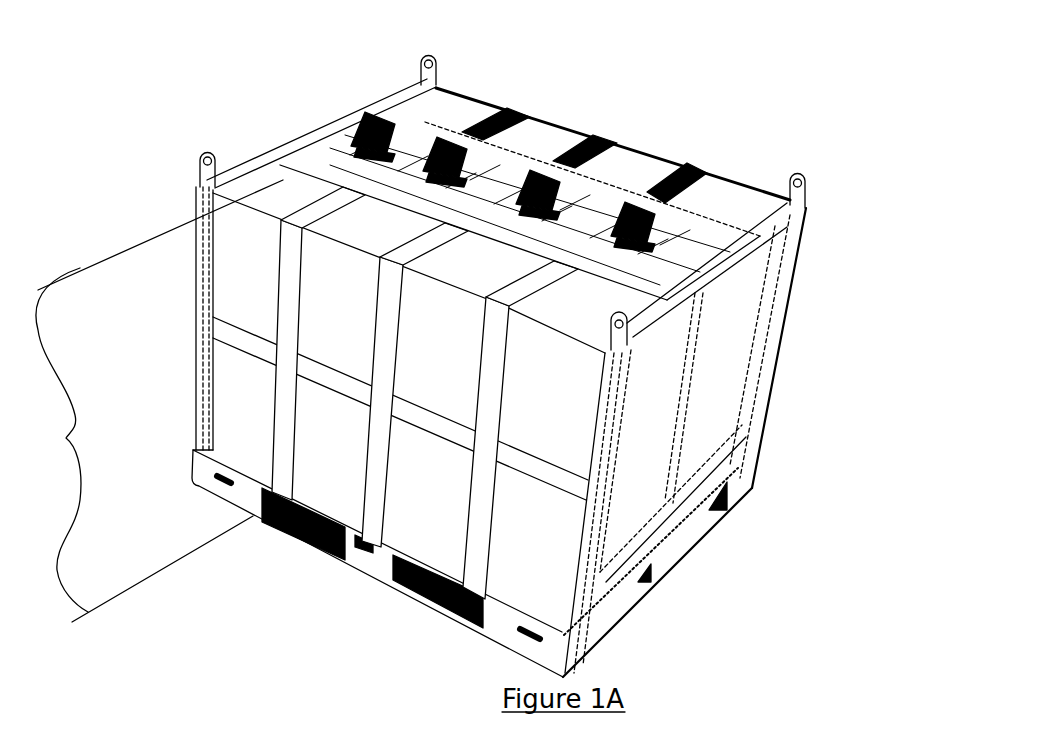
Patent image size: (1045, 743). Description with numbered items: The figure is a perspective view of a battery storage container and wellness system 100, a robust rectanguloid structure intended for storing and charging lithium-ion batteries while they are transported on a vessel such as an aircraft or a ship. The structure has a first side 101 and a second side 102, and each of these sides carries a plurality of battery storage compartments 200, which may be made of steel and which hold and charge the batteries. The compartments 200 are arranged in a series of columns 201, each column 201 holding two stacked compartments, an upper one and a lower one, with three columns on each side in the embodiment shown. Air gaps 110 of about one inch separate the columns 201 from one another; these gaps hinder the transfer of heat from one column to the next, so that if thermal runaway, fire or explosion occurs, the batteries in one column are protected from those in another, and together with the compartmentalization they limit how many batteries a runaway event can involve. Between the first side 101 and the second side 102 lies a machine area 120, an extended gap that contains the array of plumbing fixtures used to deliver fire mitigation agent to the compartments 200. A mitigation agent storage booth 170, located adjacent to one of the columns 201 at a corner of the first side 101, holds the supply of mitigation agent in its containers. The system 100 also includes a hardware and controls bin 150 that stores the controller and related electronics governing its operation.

The battery storage container and wellness system 100 is at (730, 38).
The first side 101 is at (570, 383).
The second side 102 is at (728, 172).
The air gap 110 is at (320, 200).
The machine area 120 is at (667, 257).
The hardware and controls bin 150 is at (755, 215).
The mitigation agent storage booth 170 is at (612, 315).
The battery storage compartment 200 is at (457, 93).
The column 201 is at (155, 401).